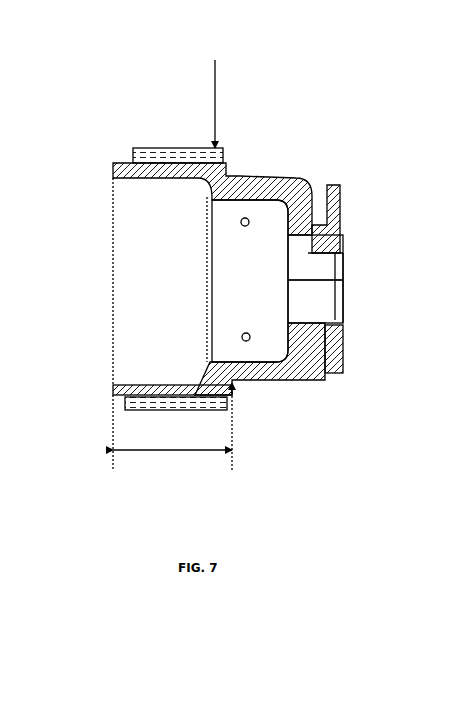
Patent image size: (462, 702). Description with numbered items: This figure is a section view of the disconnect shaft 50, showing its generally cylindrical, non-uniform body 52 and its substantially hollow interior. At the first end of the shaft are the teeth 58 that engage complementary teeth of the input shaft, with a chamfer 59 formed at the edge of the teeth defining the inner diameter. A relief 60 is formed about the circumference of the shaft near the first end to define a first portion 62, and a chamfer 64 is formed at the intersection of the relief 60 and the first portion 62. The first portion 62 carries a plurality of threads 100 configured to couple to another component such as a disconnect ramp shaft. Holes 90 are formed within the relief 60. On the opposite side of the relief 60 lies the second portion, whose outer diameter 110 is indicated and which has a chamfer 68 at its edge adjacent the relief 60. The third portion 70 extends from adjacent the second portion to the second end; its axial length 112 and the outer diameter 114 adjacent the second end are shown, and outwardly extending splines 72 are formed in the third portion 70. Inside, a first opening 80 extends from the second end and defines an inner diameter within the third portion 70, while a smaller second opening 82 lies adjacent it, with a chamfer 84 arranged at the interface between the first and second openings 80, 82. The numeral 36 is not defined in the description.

The disconnect shaft 50 is at (82, 58).
The third portion 70 is at (122, 166).
The splines 72 is at (200, 150).
The outer diameter 114 is at (213, 87).
The chamfer 68 is at (228, 172).
The relief 60 is at (252, 178).
The threads 100 is at (292, 176).
The first opening 80 is at (200, 274).
The second opening 82 is at (276, 279).
The chamfer 59 is at (348, 280).
The teeth 58 is at (312, 318).
The chamfer 64 is at (348, 346).
The holes 90 is at (250, 333).
The chamfer 84 is at (210, 362).
The first portion 62 is at (278, 392).
The body 52 is at (140, 410).
The lower flange 36 is at (112, 397).
The outer diameter 110 is at (232, 437).
The axial length 112 is at (172, 452).